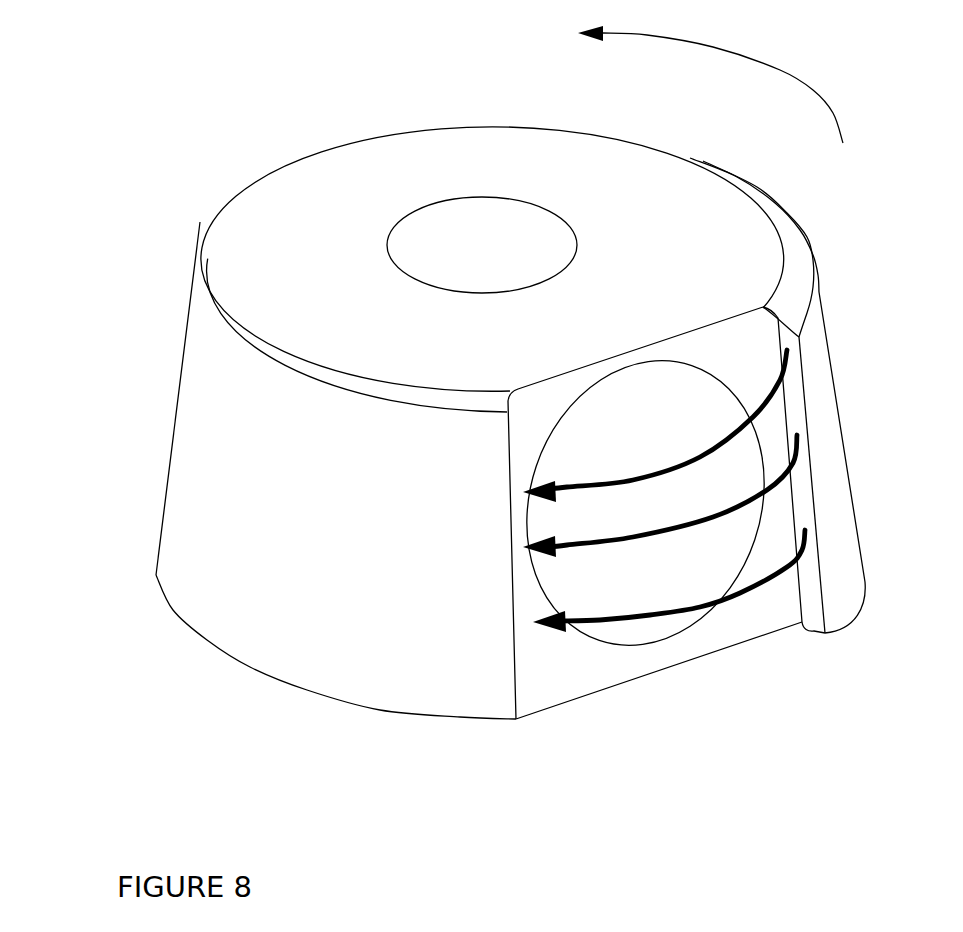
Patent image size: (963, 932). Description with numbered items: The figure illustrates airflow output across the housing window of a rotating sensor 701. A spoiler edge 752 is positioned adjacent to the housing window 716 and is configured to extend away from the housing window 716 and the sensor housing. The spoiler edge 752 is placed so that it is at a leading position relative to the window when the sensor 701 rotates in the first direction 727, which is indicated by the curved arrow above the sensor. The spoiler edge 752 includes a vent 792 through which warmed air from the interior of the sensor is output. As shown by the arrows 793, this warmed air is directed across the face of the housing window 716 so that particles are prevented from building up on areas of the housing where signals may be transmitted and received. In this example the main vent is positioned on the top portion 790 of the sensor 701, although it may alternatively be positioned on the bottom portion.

The sensor 701 is at (226, 119).
The top portion 790 is at (303, 248).
The first direction 727 is at (780, 68).
The housing window 716 is at (567, 463).
The arrows 793 is at (523, 550).
The spoiler edge 752 is at (820, 568).
The vent 792 is at (812, 630).